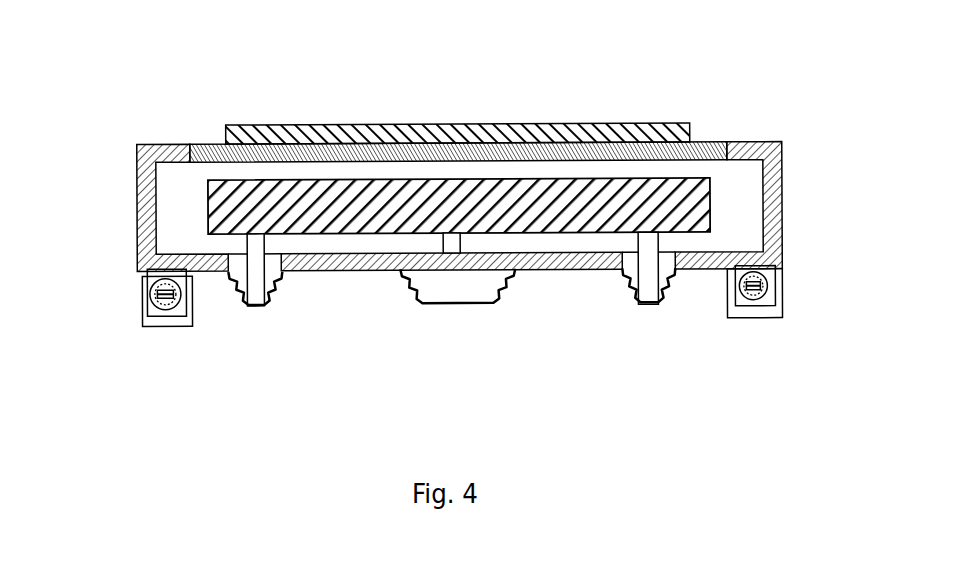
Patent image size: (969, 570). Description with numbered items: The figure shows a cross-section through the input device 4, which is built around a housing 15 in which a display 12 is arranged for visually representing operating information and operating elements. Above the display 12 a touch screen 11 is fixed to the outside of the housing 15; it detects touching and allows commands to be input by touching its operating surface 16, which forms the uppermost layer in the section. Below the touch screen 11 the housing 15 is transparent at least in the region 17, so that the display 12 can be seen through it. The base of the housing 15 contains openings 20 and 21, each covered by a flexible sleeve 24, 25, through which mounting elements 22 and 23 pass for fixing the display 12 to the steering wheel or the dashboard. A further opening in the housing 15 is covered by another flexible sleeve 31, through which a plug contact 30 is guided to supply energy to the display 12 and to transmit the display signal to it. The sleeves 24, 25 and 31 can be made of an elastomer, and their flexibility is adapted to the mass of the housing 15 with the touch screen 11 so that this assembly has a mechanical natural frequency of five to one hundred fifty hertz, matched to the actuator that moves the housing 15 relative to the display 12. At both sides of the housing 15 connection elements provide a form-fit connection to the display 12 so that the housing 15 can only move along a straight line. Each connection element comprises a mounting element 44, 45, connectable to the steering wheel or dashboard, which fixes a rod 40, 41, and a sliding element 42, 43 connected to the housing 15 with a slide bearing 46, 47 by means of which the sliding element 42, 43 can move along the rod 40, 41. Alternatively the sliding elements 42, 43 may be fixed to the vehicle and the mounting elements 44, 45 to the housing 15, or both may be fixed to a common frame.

The input device 4 is at (787, 105).
The touch screen 11 is at (406, 152).
The display 12 is at (494, 197).
The housing 15 is at (764, 142).
The operating surface 16 is at (298, 126).
The transparent region 17 is at (208, 150).
The opening 20 is at (276, 258).
The opening 21 is at (663, 258).
The mounting element 22 is at (255, 282).
The mounting element 23 is at (646, 280).
The flexible sleeve 24 is at (265, 310).
The flexible sleeve 25 is at (657, 307).
The plug contact 30 is at (449, 243).
The flexible sleeve 31 is at (477, 283).
The rod 40 is at (162, 288).
The rod 41 is at (760, 285).
The sliding element 42 is at (151, 306).
The sliding element 43 is at (768, 302).
The mounting element 44 is at (155, 318).
The mounting element 45 is at (759, 312).
The slide bearing 46 is at (163, 280).
The slide bearing 47 is at (753, 273).